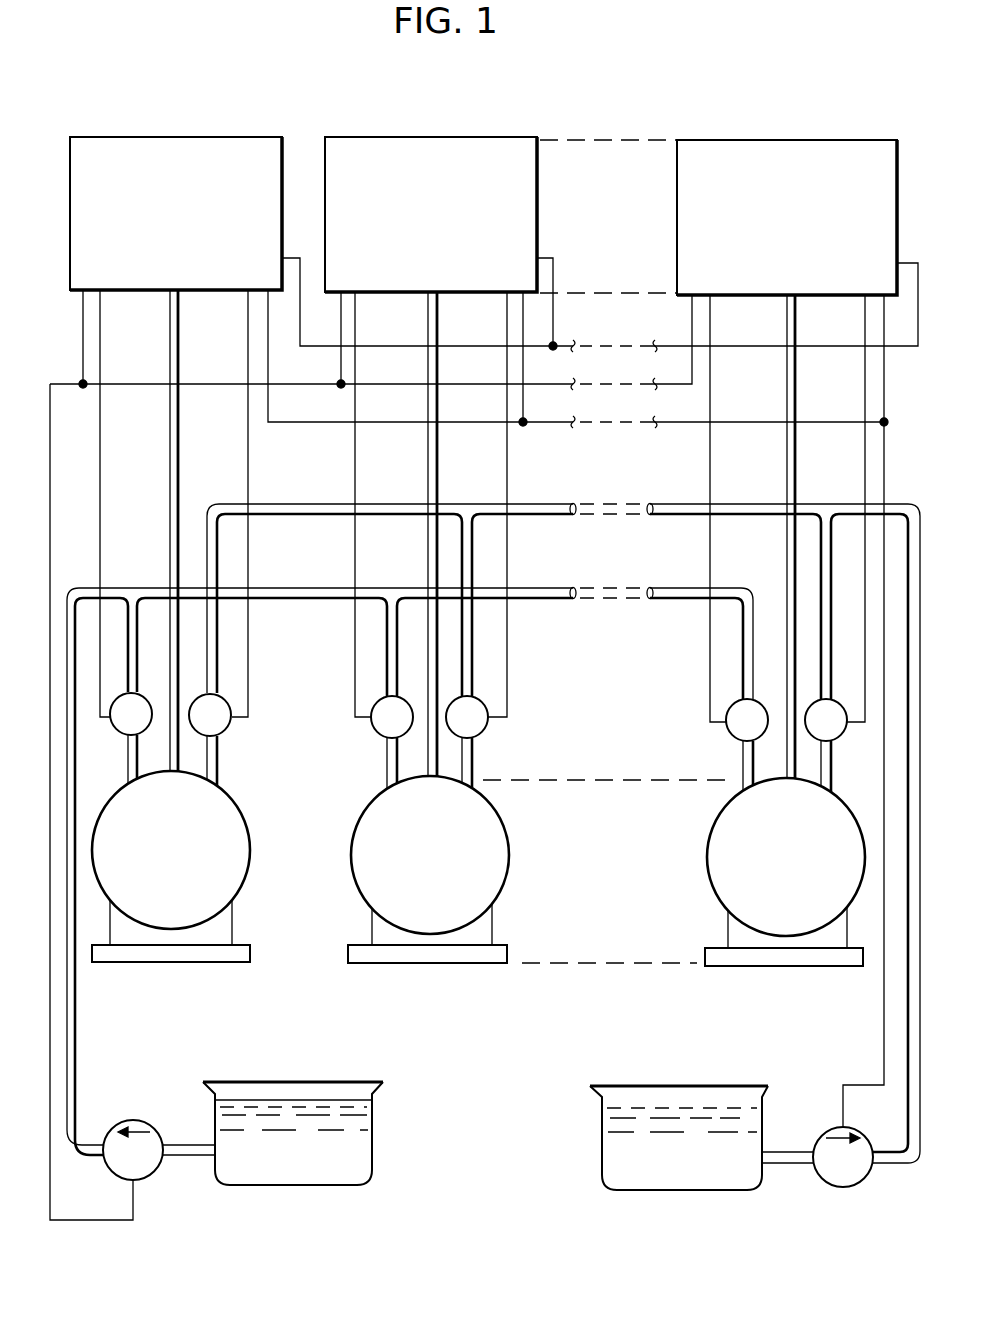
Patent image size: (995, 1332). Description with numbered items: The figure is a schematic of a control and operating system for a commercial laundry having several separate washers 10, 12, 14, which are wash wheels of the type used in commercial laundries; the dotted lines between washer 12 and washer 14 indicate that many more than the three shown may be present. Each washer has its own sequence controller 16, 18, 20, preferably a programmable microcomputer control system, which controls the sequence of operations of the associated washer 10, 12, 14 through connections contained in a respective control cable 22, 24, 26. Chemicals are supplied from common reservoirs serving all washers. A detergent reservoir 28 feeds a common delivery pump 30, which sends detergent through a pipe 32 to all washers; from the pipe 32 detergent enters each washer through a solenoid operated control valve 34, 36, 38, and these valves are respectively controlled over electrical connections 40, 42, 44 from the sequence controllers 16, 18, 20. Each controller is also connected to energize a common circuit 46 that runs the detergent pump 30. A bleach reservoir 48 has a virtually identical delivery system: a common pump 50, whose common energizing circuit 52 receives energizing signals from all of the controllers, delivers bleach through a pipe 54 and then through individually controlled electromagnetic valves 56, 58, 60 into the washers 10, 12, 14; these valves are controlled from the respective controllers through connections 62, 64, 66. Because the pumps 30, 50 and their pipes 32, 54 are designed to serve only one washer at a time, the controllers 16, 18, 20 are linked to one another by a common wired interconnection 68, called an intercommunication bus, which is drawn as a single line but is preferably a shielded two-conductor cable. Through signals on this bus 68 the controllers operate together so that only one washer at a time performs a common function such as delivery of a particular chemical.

The washer 10 is at (249, 834).
The washer 12 is at (507, 835).
The washer 14 is at (709, 838).
The sequence controller 16 is at (235, 137).
The sequence controller 18 is at (490, 137).
The sequence controller 20 is at (838, 140).
The control cable 22 is at (168, 474).
The control cable 24 is at (428, 475).
The control cable 26 is at (787, 479).
The detergent reservoir 28 is at (308, 1082).
The delivery pump 30 is at (141, 1121).
The pipe 32 is at (78, 1016).
The control valve 34 is at (119, 734).
The control valve 36 is at (378, 736).
The control valve 38 is at (730, 738).
The electrical connection 40 is at (98, 474).
The electrical connection 42 is at (353, 474).
The electrical connection 44 is at (708, 479).
The common circuit 46 is at (77, 380).
The bleach reservoir 48 is at (675, 1086).
The pump 50 is at (836, 1186).
The common energizing circuit 52 is at (835, 420).
The pipe 54 is at (903, 1172).
The electromagnetic valve 56 is at (226, 734).
The electromagnetic valve 58 is at (478, 736).
The electromagnetic valve 60 is at (836, 738).
The connection 62 is at (246, 474).
The connection 64 is at (505, 475).
The connection 66 is at (865, 479).
The wired interconnection 68 is at (330, 345).